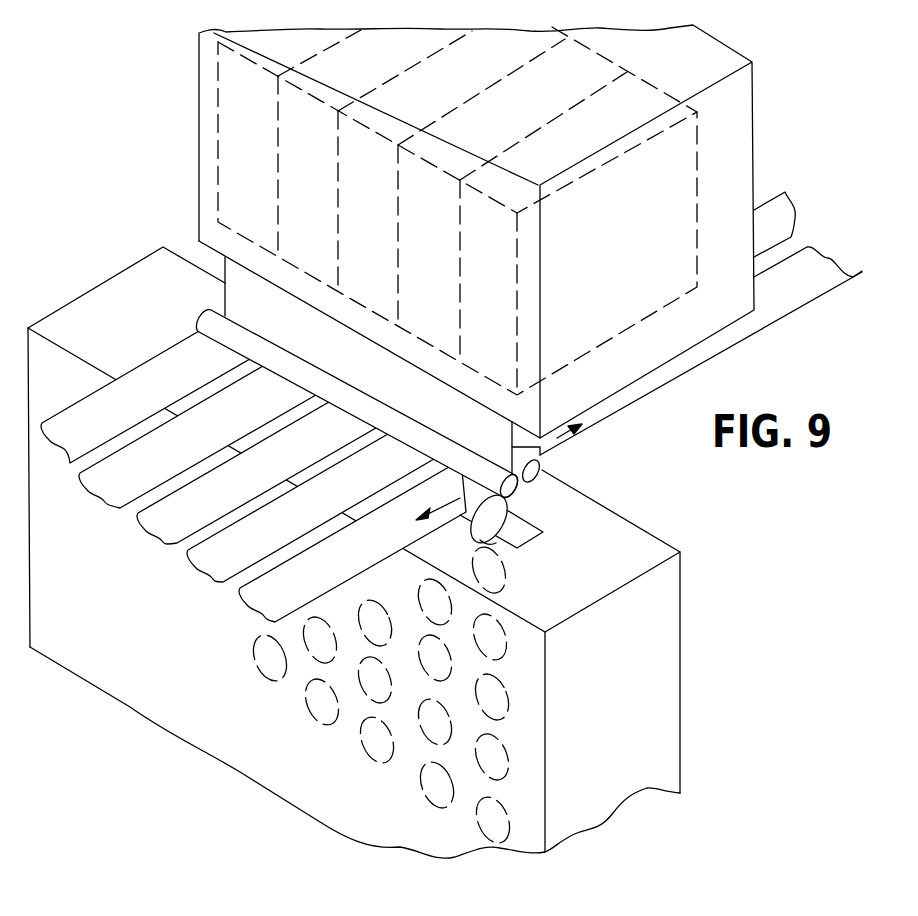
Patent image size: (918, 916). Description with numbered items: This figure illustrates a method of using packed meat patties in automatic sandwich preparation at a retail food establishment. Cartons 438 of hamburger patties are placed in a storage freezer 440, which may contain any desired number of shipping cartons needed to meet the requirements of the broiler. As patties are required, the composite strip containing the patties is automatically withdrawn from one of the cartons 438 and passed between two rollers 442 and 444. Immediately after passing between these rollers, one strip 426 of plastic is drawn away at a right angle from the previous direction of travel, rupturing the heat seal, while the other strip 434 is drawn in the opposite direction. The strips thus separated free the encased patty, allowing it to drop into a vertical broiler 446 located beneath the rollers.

The strip of plastic 426 is at (270, 617).
The strip 434 is at (821, 289).
The carton 438 is at (638, 334).
The storage freezer 440 is at (754, 162).
The roller 442 is at (538, 514).
The roller 444 is at (543, 470).
The vertical broiler 446 is at (672, 728).